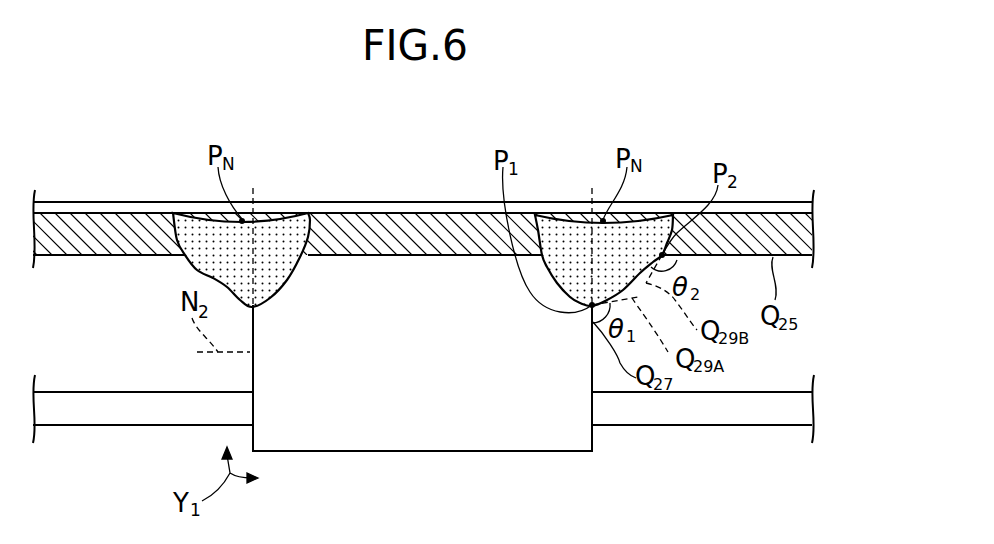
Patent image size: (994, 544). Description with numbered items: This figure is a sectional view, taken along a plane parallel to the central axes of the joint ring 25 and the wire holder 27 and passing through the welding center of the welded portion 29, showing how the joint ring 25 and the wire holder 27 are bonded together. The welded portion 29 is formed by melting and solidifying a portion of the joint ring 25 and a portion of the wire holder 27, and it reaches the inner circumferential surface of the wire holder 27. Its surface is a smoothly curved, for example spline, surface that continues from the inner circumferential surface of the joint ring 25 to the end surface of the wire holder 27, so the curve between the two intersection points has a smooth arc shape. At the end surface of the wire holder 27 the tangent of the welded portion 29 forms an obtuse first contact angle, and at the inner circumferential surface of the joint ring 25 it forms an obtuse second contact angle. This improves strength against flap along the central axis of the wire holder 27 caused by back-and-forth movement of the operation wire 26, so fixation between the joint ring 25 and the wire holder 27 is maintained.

The joint ring 25 is at (420, 230).
The operation wire 26 is at (773, 427).
The wire holder 27 is at (593, 440).
The welded portion 29 is at (277, 232).